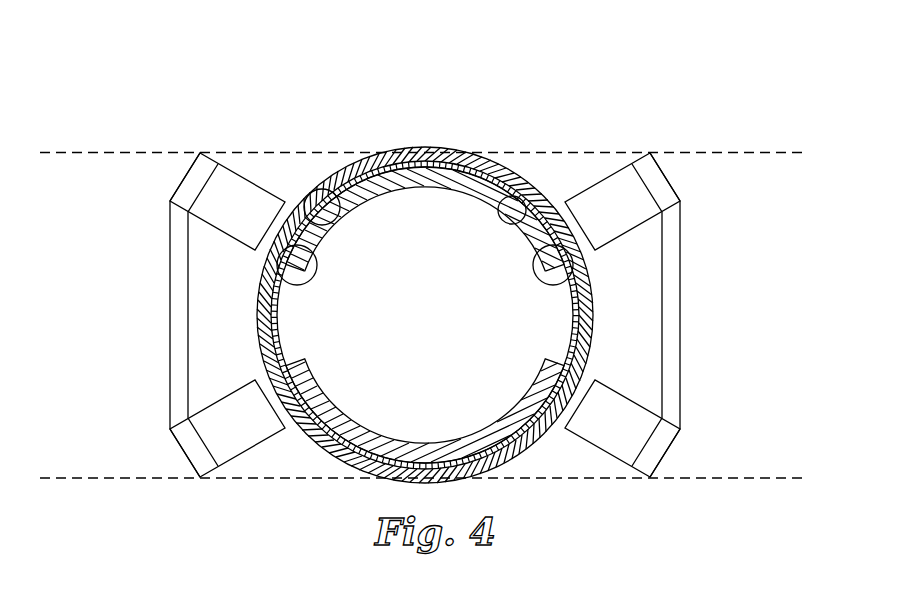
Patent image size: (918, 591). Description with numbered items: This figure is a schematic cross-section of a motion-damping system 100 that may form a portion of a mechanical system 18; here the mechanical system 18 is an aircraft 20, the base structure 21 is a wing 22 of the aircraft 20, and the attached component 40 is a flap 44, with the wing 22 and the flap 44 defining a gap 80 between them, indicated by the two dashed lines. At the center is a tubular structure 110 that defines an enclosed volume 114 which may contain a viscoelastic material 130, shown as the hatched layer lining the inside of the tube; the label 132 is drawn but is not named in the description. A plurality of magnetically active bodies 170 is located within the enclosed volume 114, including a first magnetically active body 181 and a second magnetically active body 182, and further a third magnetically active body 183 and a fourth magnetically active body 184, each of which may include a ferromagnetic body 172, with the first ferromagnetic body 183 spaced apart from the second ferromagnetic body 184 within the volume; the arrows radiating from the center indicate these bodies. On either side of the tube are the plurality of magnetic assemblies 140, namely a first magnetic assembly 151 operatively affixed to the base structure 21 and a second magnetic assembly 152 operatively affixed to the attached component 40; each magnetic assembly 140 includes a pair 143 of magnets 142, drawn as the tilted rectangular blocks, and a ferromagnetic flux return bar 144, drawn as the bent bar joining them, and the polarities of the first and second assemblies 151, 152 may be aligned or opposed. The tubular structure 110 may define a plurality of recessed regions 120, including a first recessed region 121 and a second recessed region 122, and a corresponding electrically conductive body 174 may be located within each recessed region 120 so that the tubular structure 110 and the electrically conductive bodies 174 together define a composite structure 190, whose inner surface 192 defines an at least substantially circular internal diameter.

The mechanical system 18 is at (127, 48).
The aircraft 20 is at (118, 93).
The base structure 21 is at (713, 150).
The wing 22 is at (768, 153).
The attached component 40 is at (153, 148).
The flap 44 is at (75, 153).
The gap 80 is at (325, 517).
The motion-damping system 100 is at (436, 281).
The tubular structure 110 is at (388, 145).
The enclosed volume 114 is at (437, 205).
The recessed regions 120 is at (350, 185).
The first recessed region 121 is at (585, 290).
The second recessed region 122 is at (316, 195).
The viscoelastic material 130 is at (458, 215).
The inner surface of insulation layer 132 is at (478, 200).
The magnetic assemblies 140 is at (412, 265).
The magnets 142 is at (428, 269).
The pair of magnets 143 is at (145, 300).
The ferromagnetic flux return bar 144 is at (165, 372).
The first magnetic assembly 151 is at (612, 153).
The second magnetic assembly 152 is at (238, 137).
The magnetically active bodies 170 is at (518, 328).
The ferromagnetic body 172 is at (340, 225).
The electrically conductive body 174 is at (280, 300).
The first magnetically active body 181 is at (557, 338).
The second magnetically active body 182 is at (292, 322).
The third magnetically active body 183 is at (407, 192).
The fourth magnetically active body 184 is at (447, 415).
The composite structure 190 is at (297, 458).
The inner surface 192 is at (276, 336).